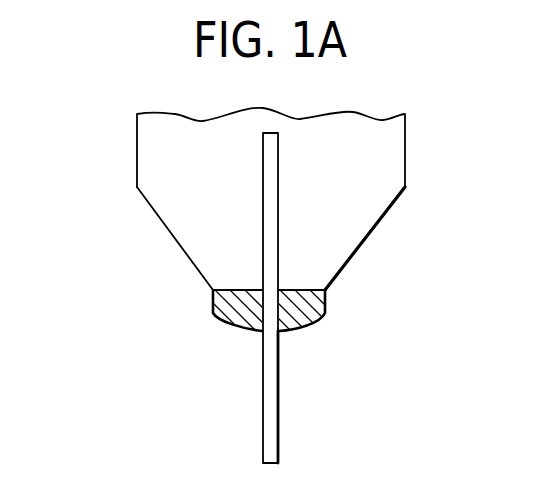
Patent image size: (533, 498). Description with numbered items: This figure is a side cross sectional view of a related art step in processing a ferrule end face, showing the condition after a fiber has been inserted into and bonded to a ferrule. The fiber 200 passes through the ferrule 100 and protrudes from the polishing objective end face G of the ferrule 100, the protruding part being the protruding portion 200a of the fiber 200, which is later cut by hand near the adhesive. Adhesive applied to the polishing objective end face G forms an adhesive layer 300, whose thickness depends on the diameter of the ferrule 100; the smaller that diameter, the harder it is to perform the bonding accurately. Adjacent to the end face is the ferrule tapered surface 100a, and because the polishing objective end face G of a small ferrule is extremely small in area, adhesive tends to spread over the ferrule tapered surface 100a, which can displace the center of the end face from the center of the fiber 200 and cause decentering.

The ferrule 100 is at (164, 227).
The ferrule tapered surface 100a is at (382, 225).
The adhesive layer 300 is at (237, 318).
The polishing objective end face G is at (307, 283).
The fiber 200 is at (262, 415).
The protruding portion 200a is at (270, 363).